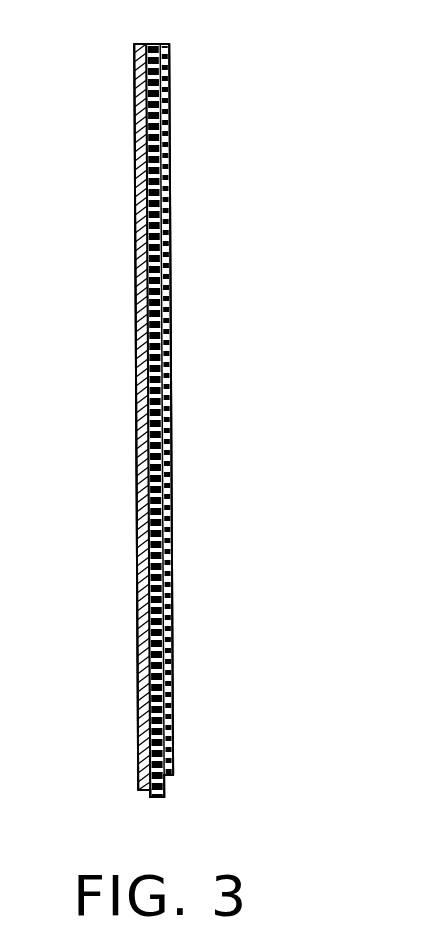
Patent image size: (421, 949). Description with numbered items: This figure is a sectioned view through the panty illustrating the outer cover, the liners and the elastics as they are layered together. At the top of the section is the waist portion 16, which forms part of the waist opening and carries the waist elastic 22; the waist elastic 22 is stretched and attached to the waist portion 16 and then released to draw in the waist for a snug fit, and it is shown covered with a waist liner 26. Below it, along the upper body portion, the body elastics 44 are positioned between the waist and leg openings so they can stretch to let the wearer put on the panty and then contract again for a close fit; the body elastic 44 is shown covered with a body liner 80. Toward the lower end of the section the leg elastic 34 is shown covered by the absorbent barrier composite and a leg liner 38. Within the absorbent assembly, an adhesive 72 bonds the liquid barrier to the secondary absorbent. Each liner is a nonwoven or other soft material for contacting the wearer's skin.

The waist portion 16 is at (158, 41).
The waist elastic 22 is at (160, 65).
The waist liner 26 is at (132, 88).
The leg elastic 34 is at (172, 696).
The leg liner 38 is at (142, 711).
The body elastics 44 is at (169, 215).
The adhesive 72 is at (136, 176).
The body liner 80 is at (136, 500).